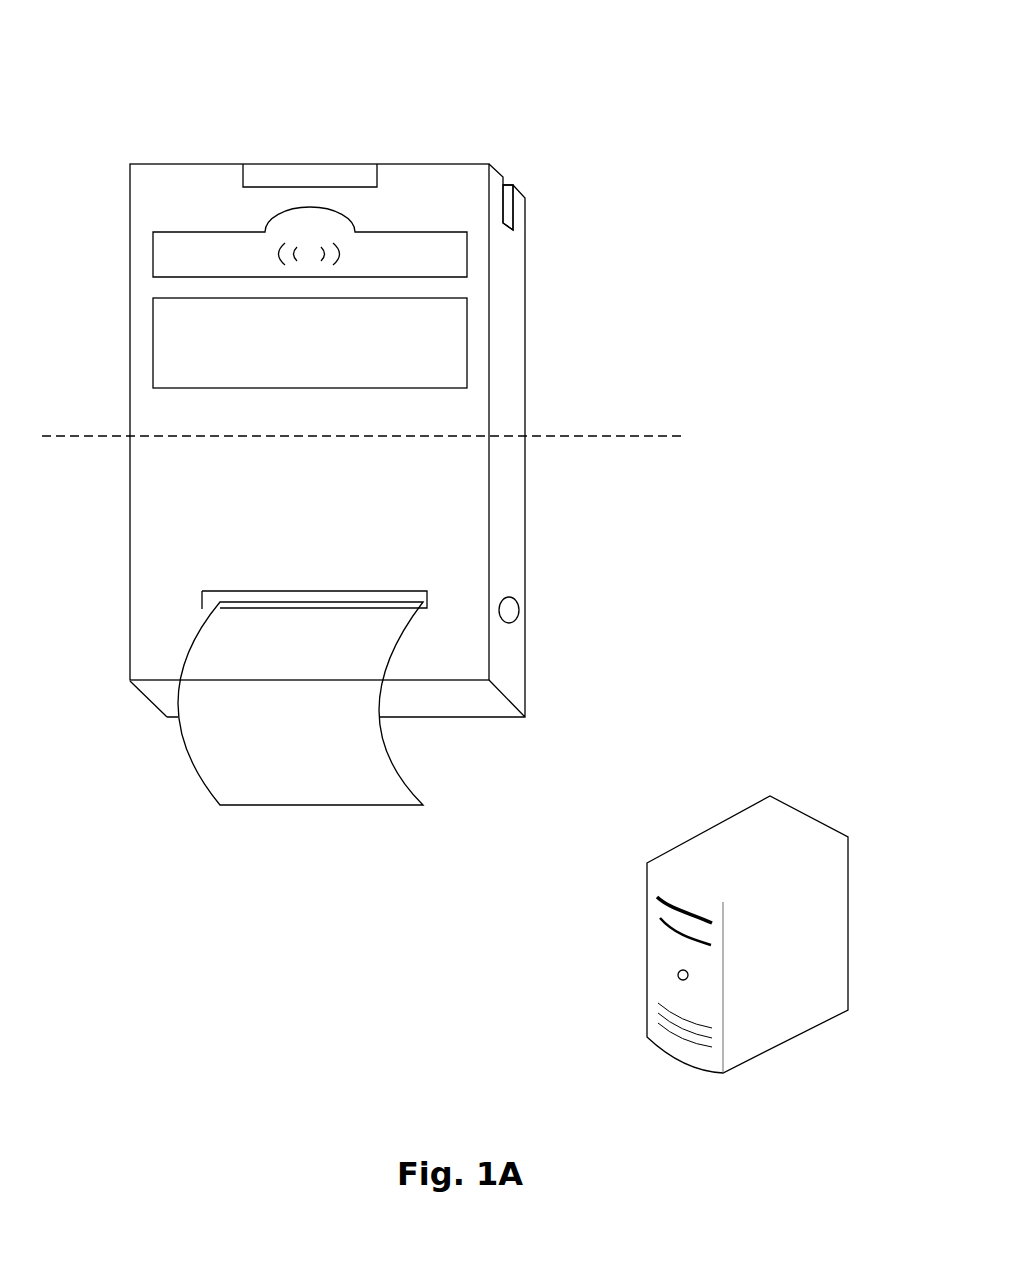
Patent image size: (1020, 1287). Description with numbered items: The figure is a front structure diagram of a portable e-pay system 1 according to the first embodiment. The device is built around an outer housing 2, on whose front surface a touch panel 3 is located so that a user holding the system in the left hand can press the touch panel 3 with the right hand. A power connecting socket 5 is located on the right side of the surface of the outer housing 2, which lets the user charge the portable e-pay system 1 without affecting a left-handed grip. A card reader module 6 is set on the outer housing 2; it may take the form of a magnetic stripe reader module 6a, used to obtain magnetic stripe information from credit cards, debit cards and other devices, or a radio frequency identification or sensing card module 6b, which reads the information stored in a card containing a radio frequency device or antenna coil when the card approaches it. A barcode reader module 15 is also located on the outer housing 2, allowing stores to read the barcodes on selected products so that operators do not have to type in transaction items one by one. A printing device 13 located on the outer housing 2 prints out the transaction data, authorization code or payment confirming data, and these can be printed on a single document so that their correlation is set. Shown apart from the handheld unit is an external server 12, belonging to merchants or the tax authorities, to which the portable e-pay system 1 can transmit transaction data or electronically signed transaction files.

The portable e-pay system 1 is at (173, 164).
The outer housing 2 is at (153, 207).
The touch panel 3 is at (185, 356).
The power connecting socket 5 is at (519, 611).
The card reader module 6 is at (408, 186).
The magnetic stripe reader module 6a is at (510, 205).
The sensing card module 6b is at (408, 243).
The external server 12 is at (647, 984).
The printing device 13 is at (202, 591).
The barcode reader module 15 is at (355, 164).